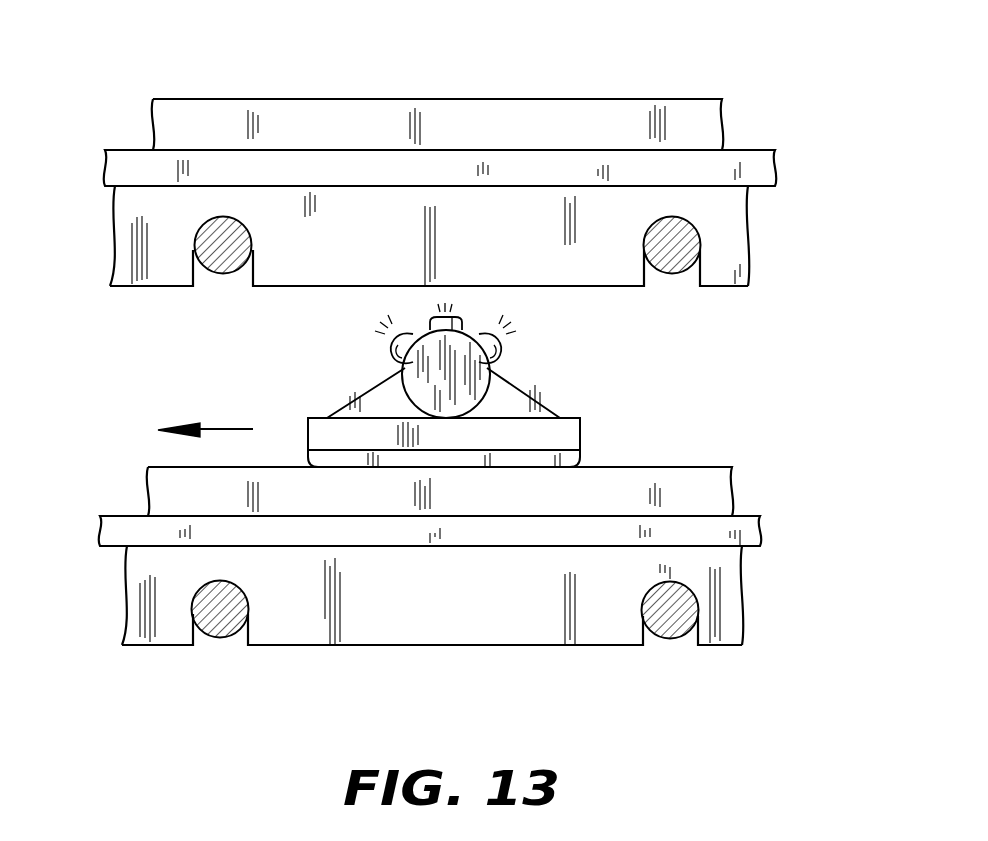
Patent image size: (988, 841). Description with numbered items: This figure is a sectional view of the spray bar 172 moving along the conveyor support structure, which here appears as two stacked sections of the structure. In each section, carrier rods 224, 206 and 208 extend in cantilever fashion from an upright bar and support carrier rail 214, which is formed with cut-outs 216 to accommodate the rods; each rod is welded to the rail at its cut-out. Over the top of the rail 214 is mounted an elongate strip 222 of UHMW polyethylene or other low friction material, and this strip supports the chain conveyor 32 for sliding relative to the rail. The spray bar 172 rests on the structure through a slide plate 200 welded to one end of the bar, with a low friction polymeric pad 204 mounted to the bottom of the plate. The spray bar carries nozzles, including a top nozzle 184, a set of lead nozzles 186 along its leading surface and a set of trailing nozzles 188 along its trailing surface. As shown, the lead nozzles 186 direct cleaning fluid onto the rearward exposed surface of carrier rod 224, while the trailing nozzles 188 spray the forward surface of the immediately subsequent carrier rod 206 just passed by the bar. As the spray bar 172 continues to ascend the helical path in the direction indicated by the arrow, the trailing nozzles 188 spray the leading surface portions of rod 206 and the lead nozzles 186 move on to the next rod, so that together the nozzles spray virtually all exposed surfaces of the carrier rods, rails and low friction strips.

The chain conveyor 32 is at (584, 118).
The strip of low friction material 222 is at (743, 167).
The carrier rail 214 is at (388, 447).
The cut-outs 216 is at (198, 275).
The carrier rod 224 is at (233, 277).
The carrier rod 206 is at (698, 240).
The carrier rod 208 is at (672, 612).
The spray bar 172 is at (590, 384).
The nozzle 184 is at (453, 322).
The lead nozzles 186 is at (397, 343).
The trailing nozzles 188 is at (498, 350).
The slide plate 200 is at (568, 432).
The low friction pad 204 is at (567, 460).